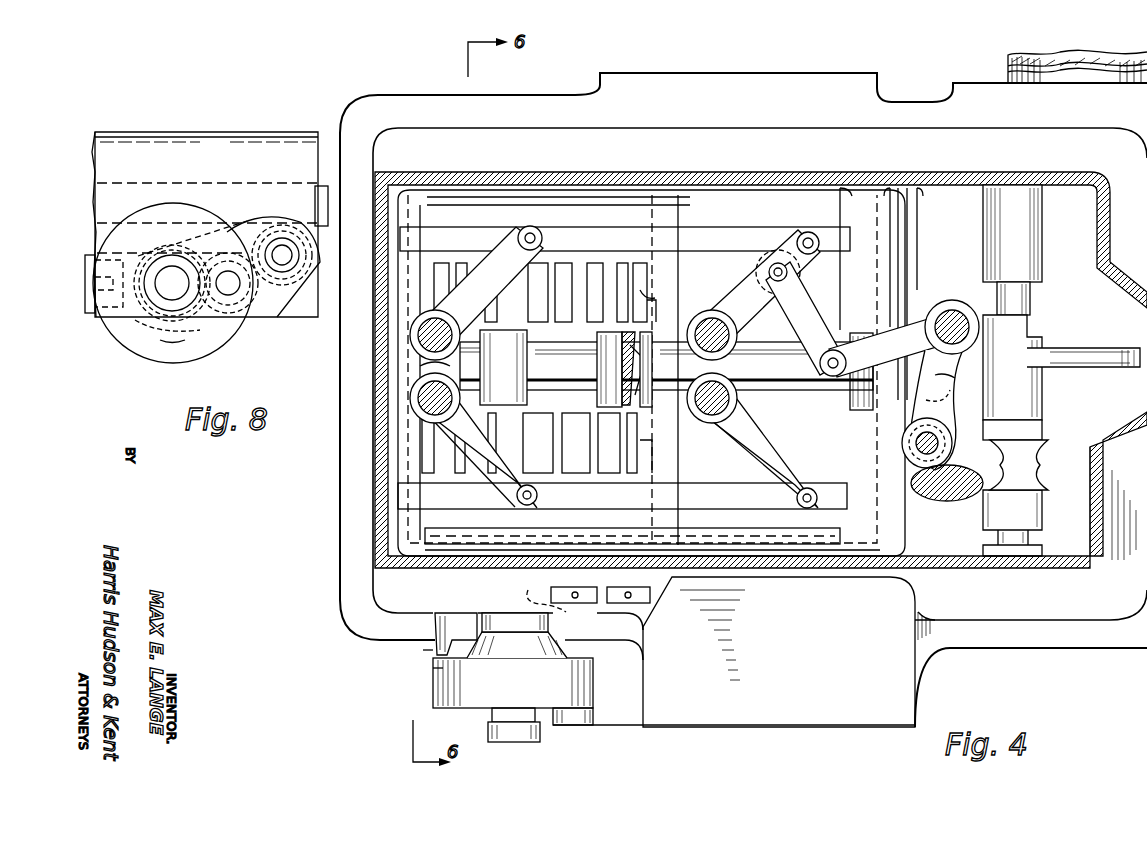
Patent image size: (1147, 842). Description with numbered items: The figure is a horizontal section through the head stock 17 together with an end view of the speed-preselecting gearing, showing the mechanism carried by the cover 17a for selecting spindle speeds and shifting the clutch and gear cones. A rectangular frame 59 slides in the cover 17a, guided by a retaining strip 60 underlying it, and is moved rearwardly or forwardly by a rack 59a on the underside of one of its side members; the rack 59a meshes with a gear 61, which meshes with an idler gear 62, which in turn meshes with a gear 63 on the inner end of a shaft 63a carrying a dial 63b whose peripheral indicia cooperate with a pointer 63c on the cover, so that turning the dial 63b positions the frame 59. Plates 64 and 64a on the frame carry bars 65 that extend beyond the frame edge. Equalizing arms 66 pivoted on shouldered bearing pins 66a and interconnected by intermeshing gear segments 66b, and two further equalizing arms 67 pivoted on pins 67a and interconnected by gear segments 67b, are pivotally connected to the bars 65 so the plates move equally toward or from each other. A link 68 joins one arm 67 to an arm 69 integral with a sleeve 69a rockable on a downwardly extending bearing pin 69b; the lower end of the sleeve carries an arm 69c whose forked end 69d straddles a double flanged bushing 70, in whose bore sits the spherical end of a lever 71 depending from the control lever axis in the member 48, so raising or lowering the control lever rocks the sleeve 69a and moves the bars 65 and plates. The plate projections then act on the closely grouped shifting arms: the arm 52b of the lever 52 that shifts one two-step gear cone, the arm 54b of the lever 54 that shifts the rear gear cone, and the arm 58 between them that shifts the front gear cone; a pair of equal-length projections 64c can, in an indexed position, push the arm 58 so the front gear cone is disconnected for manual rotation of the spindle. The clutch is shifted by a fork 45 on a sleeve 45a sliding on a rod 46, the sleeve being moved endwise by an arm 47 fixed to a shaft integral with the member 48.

In FIG. 4, the housing 17 is at (1108, 650).
In FIG. 8, the cover 17a is at (230, 137).
In FIG. 4, the cover 17a is at (1047, 612).
In FIG. 4, the fork 45 is at (1102, 350).
In FIG. 4, the sleeve 45a is at (1035, 400).
In FIG. 4, the rod 46 is at (1028, 307).
In FIG. 4, the arm 47 is at (1040, 462).
In FIG. 4, the member 48 is at (948, 488).
In FIG. 4, the lever 52 is at (865, 405).
In FIG. 4, the arm 52b is at (642, 384).
In FIG. 4, the lever 54 is at (515, 332).
In FIG. 4, the arm 54b is at (612, 348).
In FIG. 4, the arm 58 is at (630, 368).
In FIG. 8, the rectangular frame 59 is at (322, 186).
In FIG. 8, the rack 59a is at (228, 232).
In FIG. 8, the retaining strip 60 is at (166, 236).
In FIG. 8, the gear 61 is at (285, 300).
In FIG. 4, the gear 61 is at (685, 548).
In FIG. 8, the idler gear 62 is at (240, 313).
In FIG. 4, the idler gear 62 is at (582, 530).
In FIG. 8, the gear 63 is at (198, 330).
In FIG. 4, the gear 63 is at (492, 520).
In FIG. 8, the shaft 63a is at (168, 290).
In FIG. 4, the shaft 63a is at (556, 608).
In FIG. 8, the dial 63b is at (180, 345).
In FIG. 4, the dial 63b is at (436, 676).
In FIG. 8, the pointer 63c is at (96, 314).
In FIG. 4, the pointer 63c is at (425, 650).
In FIG. 4, the plate 64 is at (645, 265).
In FIG. 4, the plate 64a is at (645, 470).
In FIG. 4, the projections 64c is at (640, 295).
In FIG. 4, the bars 65 is at (622, 230).
In FIG. 4, the equalizing arms 66 is at (542, 246).
In FIG. 4, the shouldered bearing pins 66a is at (412, 335).
In FIG. 4, the gear segments 66b is at (425, 367).
In FIG. 4, the equalizing arms 67 is at (805, 270).
In FIG. 4, the shouldered bearing pins 67a is at (736, 400).
In FIG. 4, the gear segments 67b is at (737, 340).
In FIG. 4, the link 68 is at (800, 302).
In FIG. 4, the arm 69 is at (880, 350).
In FIG. 4, the sleeve 69a is at (930, 313).
In FIG. 4, the shouldered bearing pin 69b is at (952, 324).
In FIG. 4, the arm 69c is at (950, 377).
In FIG. 4, the forked portion 69d is at (905, 440).
In FIG. 4, the double flanged bushing 70 is at (915, 455).
In FIG. 4, the lever 71 is at (925, 450).